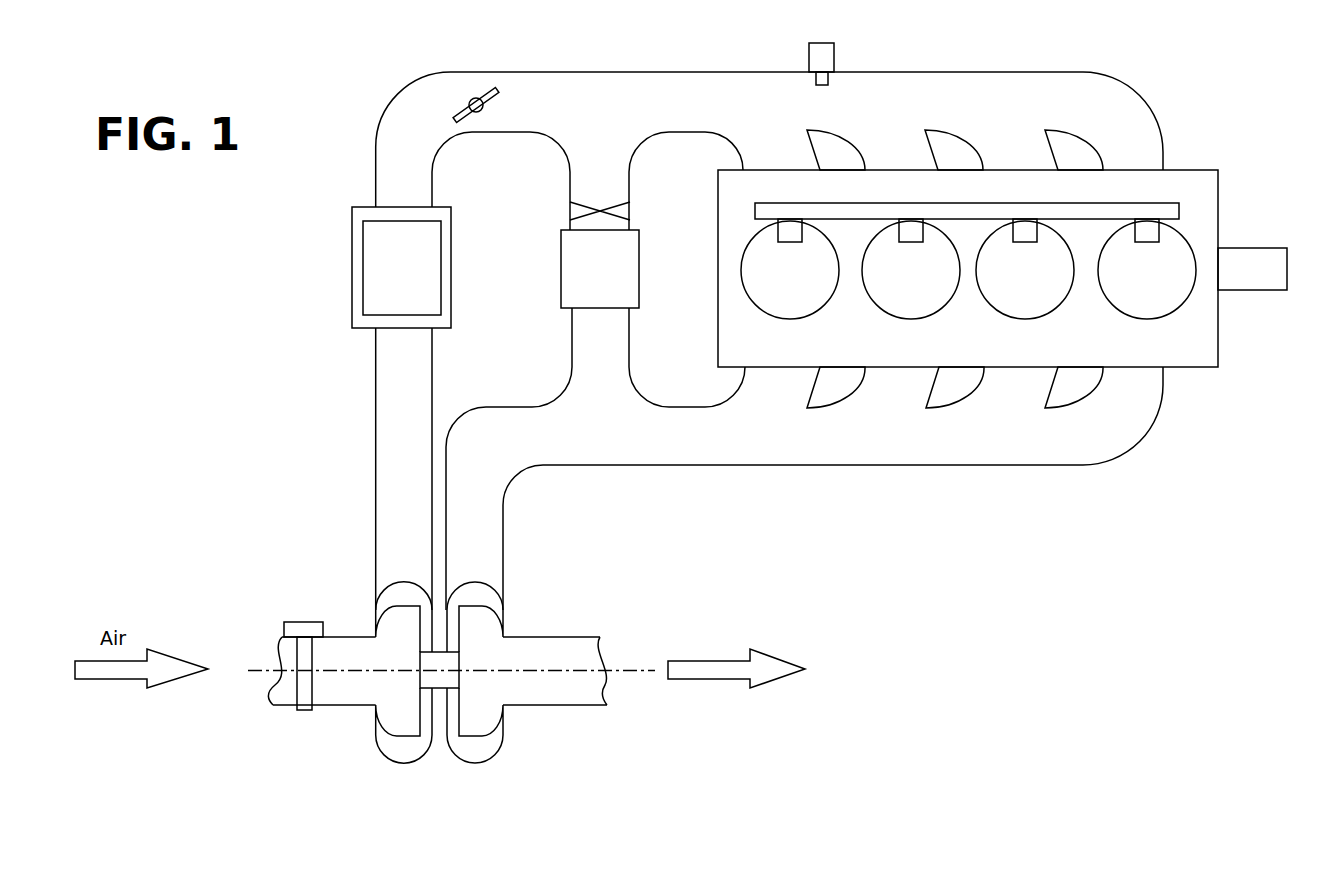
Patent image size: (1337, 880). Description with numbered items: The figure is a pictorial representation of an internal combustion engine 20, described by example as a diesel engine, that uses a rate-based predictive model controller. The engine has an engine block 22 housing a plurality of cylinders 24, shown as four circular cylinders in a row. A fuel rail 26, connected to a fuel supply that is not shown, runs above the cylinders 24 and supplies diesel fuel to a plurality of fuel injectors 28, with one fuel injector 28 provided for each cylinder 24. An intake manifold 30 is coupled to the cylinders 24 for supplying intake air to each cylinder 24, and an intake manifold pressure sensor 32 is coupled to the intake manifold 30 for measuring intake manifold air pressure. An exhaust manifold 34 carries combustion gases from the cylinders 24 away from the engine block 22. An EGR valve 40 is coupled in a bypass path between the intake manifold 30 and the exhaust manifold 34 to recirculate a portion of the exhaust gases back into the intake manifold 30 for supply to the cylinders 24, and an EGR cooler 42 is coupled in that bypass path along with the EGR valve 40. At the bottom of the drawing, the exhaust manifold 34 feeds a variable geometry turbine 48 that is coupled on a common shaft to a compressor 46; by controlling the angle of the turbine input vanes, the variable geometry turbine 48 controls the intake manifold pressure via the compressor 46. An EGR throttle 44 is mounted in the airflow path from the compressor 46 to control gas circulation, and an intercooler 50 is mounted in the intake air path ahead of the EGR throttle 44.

The internal combustion engine 20 is at (722, 62).
The engine block 22 is at (903, 352).
The cylinders 24 is at (781, 316).
The fuel rail 26 is at (1100, 203).
The fuel injectors 28 is at (790, 232).
The intake manifold 30 is at (1043, 72).
The intake manifold pressure sensor 32 is at (837, 58).
The exhaust manifold 34 is at (1023, 467).
The EGR valve 40 is at (587, 203).
The EGR cooler 42 is at (553, 256).
The EGR throttle 44 is at (460, 86).
The compressor 46 is at (395, 703).
The variable geometry turbine 48 is at (478, 703).
The intercooler 50 is at (346, 271).